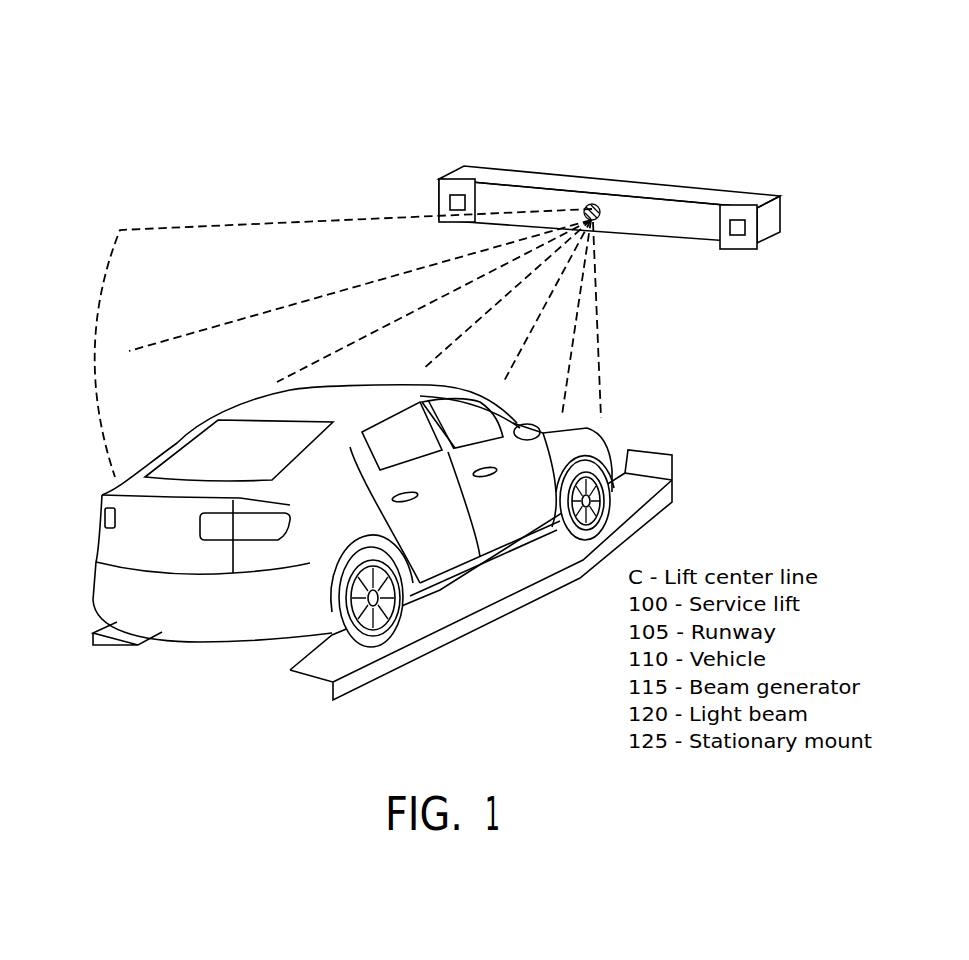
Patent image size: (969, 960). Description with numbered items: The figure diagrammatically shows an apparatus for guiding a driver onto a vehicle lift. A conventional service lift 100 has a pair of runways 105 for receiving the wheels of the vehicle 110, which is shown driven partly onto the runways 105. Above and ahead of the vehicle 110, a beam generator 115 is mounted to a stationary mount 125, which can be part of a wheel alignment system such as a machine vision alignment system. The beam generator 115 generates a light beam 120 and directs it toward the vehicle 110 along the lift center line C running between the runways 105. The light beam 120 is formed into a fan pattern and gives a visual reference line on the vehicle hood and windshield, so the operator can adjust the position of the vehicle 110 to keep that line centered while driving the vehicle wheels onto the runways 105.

The service lift 100 is at (367, 363).
The runways 105 is at (128, 640).
The vehicle 110 is at (106, 513).
The beam generator 115 is at (597, 207).
The light beam 120 is at (96, 257).
The stationary mount 125 is at (688, 188).
The lift center line C is at (605, 377).